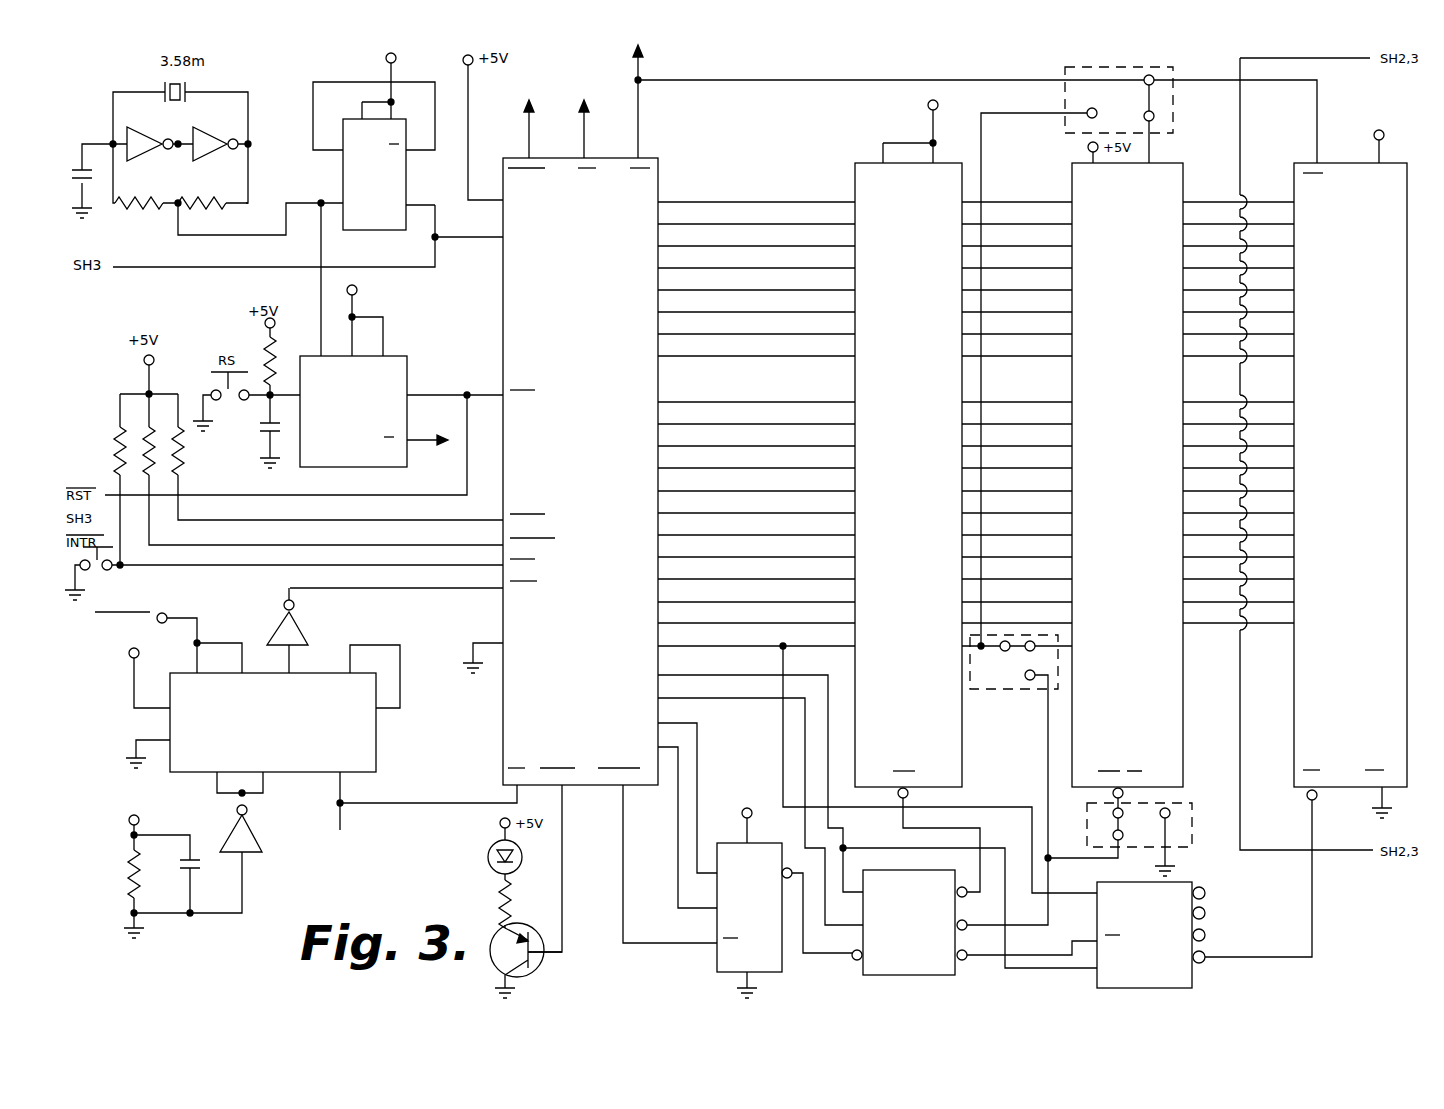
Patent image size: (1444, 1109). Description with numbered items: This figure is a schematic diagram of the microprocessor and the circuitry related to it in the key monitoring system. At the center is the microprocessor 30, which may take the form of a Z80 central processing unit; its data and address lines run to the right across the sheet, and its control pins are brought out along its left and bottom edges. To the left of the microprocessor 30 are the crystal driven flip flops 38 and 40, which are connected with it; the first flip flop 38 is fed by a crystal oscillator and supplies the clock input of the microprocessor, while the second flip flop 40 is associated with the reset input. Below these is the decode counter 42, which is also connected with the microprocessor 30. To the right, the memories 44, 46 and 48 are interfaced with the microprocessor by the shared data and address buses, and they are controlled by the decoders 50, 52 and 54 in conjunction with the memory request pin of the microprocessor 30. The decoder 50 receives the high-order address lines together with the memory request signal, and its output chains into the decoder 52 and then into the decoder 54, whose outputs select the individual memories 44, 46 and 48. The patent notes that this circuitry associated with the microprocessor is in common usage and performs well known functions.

The microprocessor 30 is at (656, 188).
The flip flop 38 is at (348, 176).
The flip flop 40 is at (348, 455).
The decode counter 42 is at (376, 740).
The memory 44 is at (955, 737).
The memory 46 is at (1168, 728).
The memory 48 is at (1318, 662).
The decoder 50 is at (717, 960).
The decoder 52 is at (887, 968).
The decoder 54 is at (1185, 976).